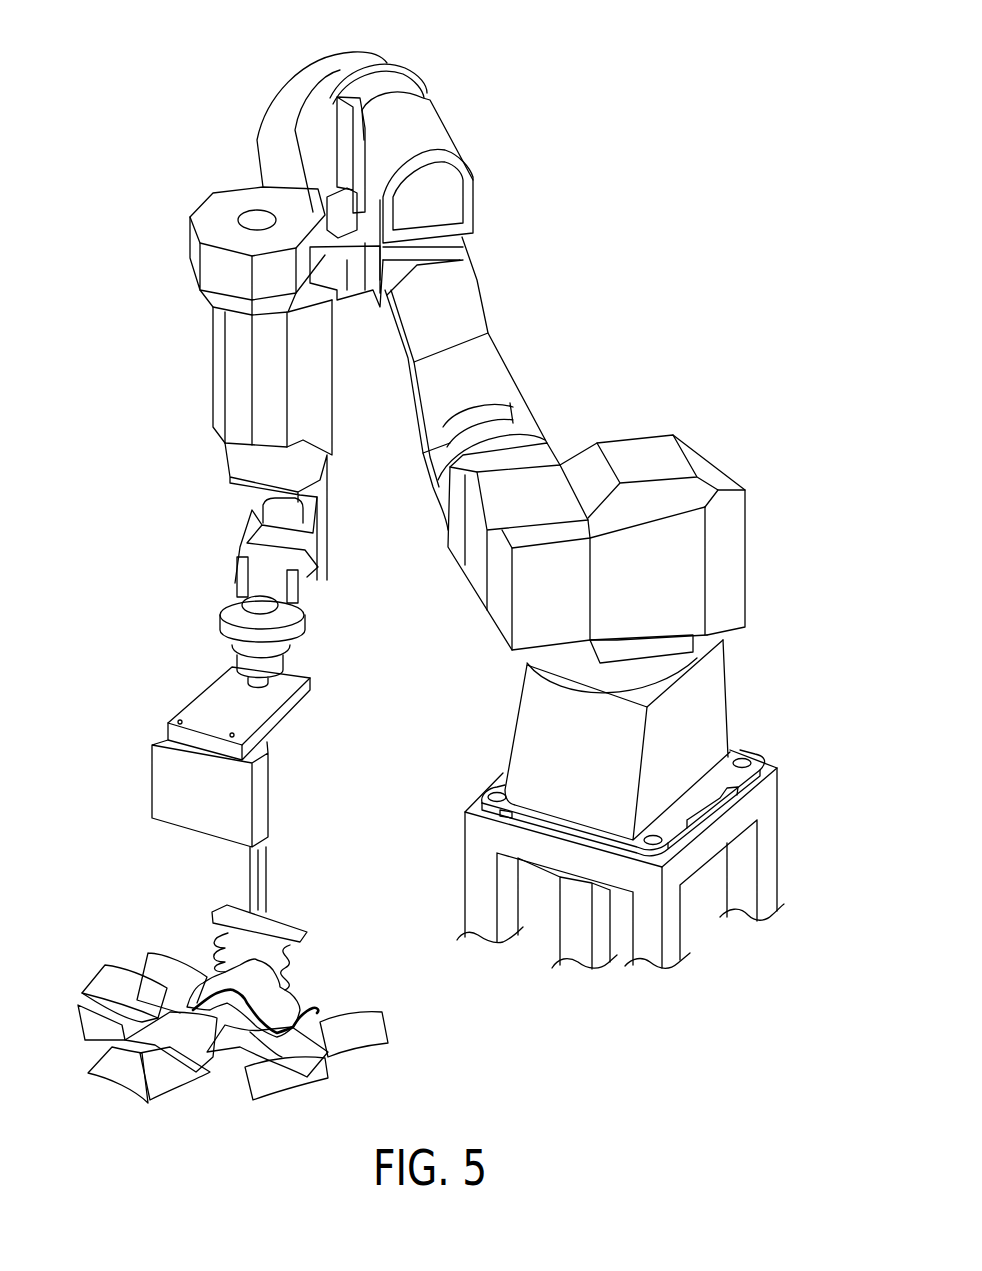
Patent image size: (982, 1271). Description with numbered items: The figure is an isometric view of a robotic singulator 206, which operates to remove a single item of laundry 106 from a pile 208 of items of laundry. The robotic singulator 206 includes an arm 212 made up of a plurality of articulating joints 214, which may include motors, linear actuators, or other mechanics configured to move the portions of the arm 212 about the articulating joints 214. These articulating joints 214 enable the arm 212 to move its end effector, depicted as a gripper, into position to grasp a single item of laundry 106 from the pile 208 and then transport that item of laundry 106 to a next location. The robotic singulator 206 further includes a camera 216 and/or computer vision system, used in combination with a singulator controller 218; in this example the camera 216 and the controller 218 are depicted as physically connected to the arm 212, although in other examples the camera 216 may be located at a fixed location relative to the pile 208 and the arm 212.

The item of laundry 106 is at (284, 1003).
The robotic singulator 206 is at (686, 344).
The pile of items of laundry 208 is at (128, 952).
The arm 212 is at (207, 408).
The articulating joints 214 is at (182, 229).
The camera 216 is at (150, 778).
The singulator controller 218 is at (727, 704).